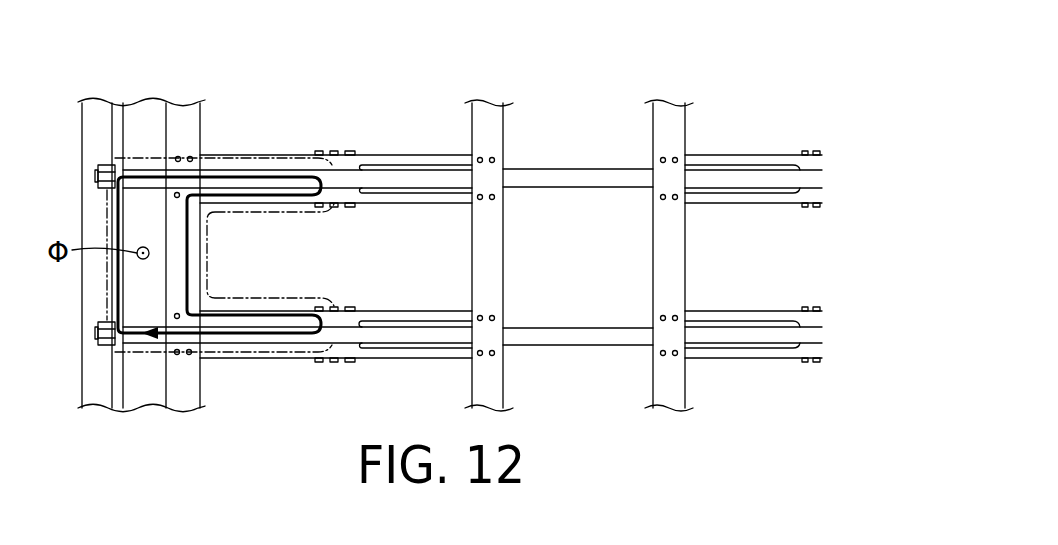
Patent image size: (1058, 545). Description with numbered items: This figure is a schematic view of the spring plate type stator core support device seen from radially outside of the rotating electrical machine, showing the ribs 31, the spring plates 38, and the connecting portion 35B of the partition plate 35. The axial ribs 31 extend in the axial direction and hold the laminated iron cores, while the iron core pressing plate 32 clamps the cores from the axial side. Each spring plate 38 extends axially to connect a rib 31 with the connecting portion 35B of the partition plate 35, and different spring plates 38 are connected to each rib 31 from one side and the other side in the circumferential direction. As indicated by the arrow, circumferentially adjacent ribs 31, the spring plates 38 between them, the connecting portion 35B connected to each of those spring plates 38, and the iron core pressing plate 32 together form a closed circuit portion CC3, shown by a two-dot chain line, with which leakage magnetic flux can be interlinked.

The iron core pressing plate 32 is at (112, 127).
The connecting portion 35B is at (201, 115).
The partition plate 35 is at (442, 226).
The spring plate 38 is at (280, 152).
The axial rib 31 is at (402, 177).
The closed circuit portion CC3 is at (325, 296).